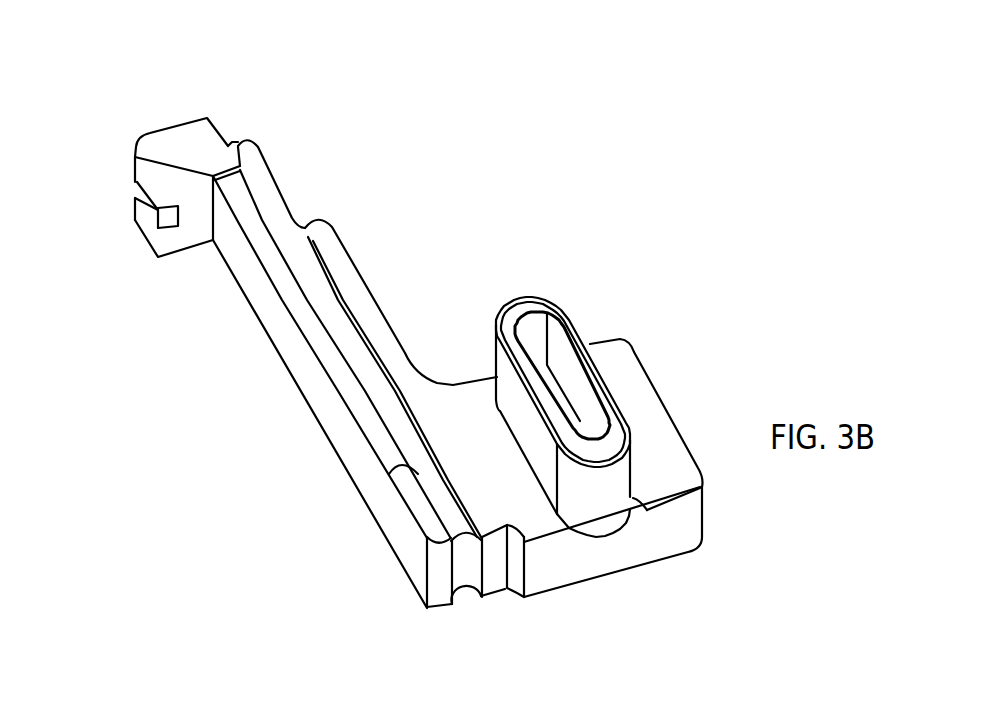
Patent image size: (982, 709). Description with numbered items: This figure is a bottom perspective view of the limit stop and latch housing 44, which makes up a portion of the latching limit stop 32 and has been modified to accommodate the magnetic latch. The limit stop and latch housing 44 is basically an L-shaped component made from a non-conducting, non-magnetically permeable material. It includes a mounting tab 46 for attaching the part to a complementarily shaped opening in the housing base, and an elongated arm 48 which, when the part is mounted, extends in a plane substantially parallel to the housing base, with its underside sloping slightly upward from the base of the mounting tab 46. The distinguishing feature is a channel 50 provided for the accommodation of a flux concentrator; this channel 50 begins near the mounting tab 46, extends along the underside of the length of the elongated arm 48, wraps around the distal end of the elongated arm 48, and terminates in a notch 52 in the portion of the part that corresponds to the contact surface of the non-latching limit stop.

The latching limit stop 32 is at (670, 328).
The limit stop and latch housing 44 is at (103, 359).
The mounting tab 46 is at (608, 508).
The elongated arm 48 is at (373, 295).
The channel 50 is at (474, 608).
The notch 52 is at (148, 227).